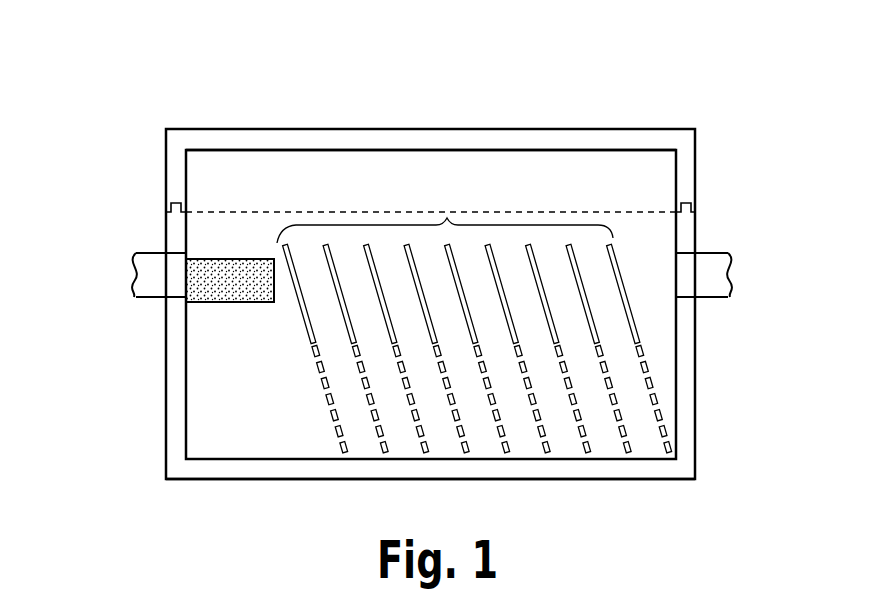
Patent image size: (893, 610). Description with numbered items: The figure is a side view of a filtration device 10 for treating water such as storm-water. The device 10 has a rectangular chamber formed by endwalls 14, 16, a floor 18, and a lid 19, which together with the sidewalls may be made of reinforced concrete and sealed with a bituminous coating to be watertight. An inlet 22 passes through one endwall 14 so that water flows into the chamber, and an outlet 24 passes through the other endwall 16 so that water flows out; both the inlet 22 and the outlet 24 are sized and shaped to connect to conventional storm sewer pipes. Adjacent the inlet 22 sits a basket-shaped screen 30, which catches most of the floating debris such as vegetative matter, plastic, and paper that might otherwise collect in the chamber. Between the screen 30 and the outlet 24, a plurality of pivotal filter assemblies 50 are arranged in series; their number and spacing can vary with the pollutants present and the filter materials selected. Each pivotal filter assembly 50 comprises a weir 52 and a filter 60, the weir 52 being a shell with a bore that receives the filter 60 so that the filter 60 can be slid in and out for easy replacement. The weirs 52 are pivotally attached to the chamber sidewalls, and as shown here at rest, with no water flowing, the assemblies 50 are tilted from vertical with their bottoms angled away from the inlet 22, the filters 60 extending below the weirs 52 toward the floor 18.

The filtration device 10 is at (660, 97).
The endwall 14 is at (185, 430).
The endwall 16 is at (697, 410).
The floor 18 is at (303, 470).
The lid 19 is at (473, 140).
The inlet 22 is at (134, 272).
The outlet 24 is at (731, 270).
The screen 30 is at (215, 303).
The pivotal filter assembly 50 is at (445, 218).
The weir 52 is at (302, 323).
The filter 60 is at (547, 433).